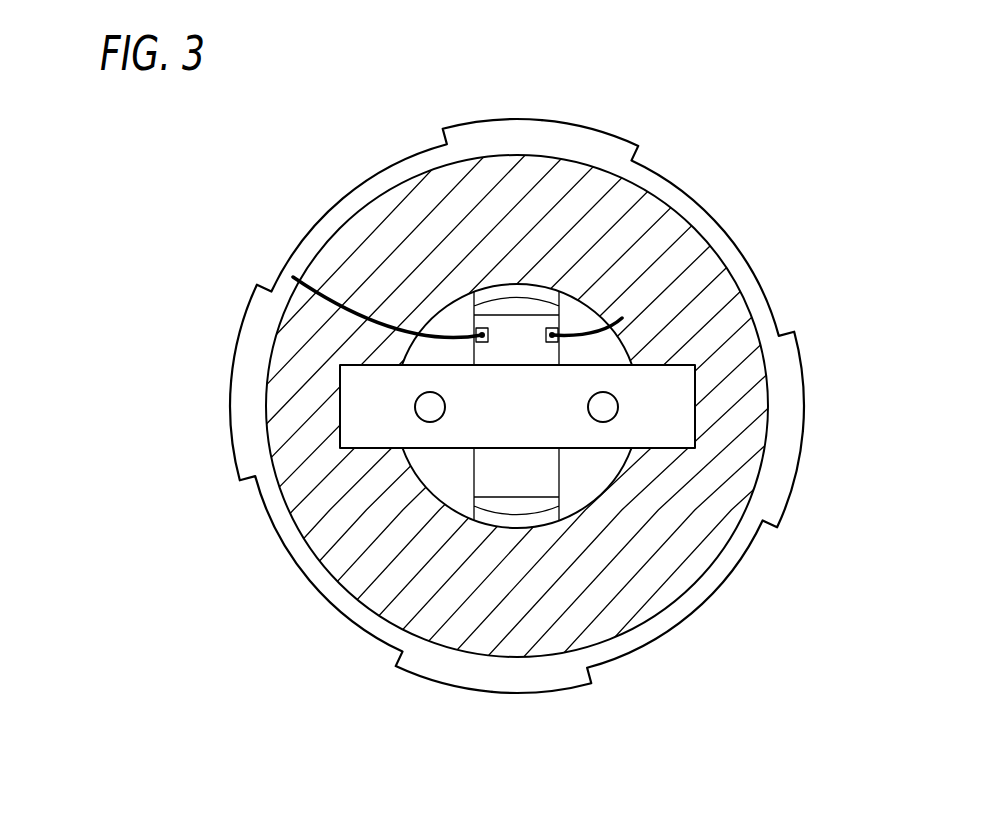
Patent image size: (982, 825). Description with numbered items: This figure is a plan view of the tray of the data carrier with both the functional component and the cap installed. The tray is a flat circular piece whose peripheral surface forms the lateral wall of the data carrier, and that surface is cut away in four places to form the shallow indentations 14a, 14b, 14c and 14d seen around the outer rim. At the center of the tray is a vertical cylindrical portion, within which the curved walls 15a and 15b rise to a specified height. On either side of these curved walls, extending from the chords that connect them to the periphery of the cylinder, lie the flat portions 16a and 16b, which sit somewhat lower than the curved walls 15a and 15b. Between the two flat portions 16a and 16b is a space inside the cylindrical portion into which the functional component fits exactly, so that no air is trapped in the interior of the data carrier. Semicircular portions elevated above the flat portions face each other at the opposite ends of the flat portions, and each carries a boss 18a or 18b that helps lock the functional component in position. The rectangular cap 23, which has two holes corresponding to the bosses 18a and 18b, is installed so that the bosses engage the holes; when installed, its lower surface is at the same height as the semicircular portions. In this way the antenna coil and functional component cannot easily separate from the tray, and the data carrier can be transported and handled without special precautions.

The shallow indentation 14a is at (297, 250).
The shallow indentation 14b is at (710, 213).
The shallow indentation 14c is at (665, 633).
The shallow indentation 14d is at (305, 552).
The curved wall 15a is at (488, 293).
The curved wall 15b is at (537, 520).
The flat portion 16a is at (445, 470).
The flat portion 16b is at (593, 473).
The boss 18a is at (415, 406).
The boss 18b is at (618, 413).
The rectangular cap 23 is at (675, 385).